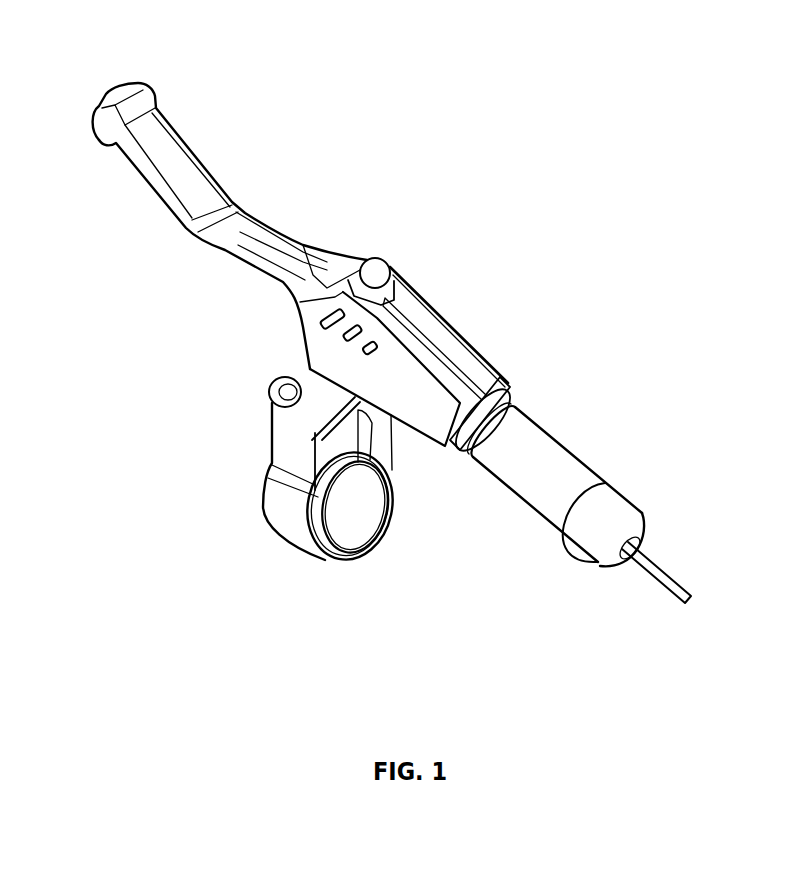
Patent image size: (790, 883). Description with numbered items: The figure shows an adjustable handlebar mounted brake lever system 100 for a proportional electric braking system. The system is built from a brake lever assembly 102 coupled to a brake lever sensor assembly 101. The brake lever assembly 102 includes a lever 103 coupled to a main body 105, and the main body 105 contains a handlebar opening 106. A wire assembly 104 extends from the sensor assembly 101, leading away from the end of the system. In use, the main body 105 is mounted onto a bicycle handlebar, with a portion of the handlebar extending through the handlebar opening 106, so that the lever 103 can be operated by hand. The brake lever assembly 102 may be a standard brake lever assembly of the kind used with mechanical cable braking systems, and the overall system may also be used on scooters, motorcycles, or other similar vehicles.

The adjustable handlebar mounted brake lever system 100 is at (337, 116).
The brake lever sensor assembly 101 is at (553, 435).
The brake lever assembly 102 is at (450, 324).
The lever 103 is at (137, 167).
The wire assembly 104 is at (652, 578).
The main body 105 is at (270, 427).
The handlebar opening 106 is at (358, 533).